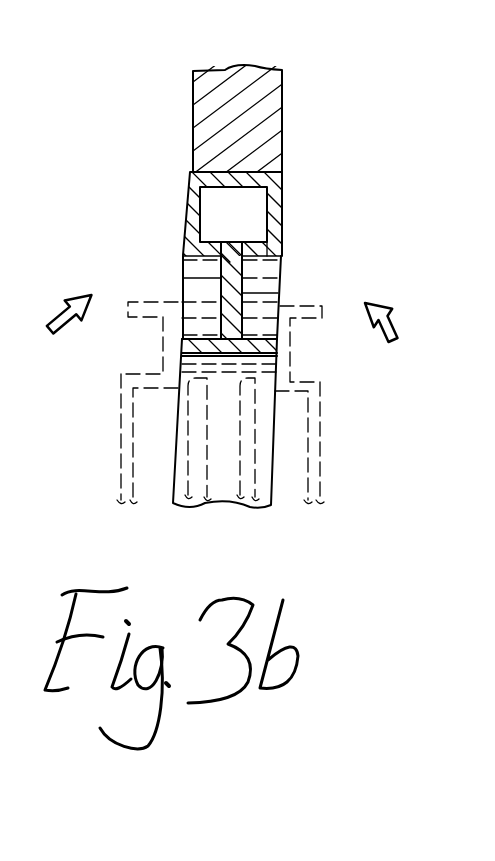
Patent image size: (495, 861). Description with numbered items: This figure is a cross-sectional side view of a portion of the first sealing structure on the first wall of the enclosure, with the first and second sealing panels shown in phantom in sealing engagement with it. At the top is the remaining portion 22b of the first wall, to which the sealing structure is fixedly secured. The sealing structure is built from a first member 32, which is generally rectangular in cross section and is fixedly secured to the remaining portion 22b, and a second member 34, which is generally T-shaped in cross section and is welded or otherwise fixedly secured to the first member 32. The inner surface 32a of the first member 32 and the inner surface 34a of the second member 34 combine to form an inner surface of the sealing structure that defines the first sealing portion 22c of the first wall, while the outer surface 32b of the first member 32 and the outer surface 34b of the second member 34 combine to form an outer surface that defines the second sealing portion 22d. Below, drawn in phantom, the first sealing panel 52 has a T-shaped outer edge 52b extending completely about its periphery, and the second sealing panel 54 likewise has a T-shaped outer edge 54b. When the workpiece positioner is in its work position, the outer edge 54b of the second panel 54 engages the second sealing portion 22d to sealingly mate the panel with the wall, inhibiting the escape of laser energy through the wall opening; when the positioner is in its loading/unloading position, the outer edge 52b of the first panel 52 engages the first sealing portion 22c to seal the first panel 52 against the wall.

The remaining portion of the first wall 22b is at (255, 101).
The first sealing portion 22c is at (247, 270).
The second sealing portion 22d is at (197, 288).
The first member 32 is at (281, 203).
The inner surface of the first member 32a is at (282, 265).
The outer surface of the first member 32b is at (184, 270).
The second member 34 is at (279, 257).
The inner surface of the second member 34a is at (277, 293).
The outer surface of the second member 34b is at (186, 275).
The first sealing panel 52 is at (312, 428).
The T-shaped outer edge of the first sealing panel 52b is at (302, 313).
The second sealing panel 54 is at (121, 443).
The T-shaped outer edge of the second sealing panel 54b is at (176, 345).